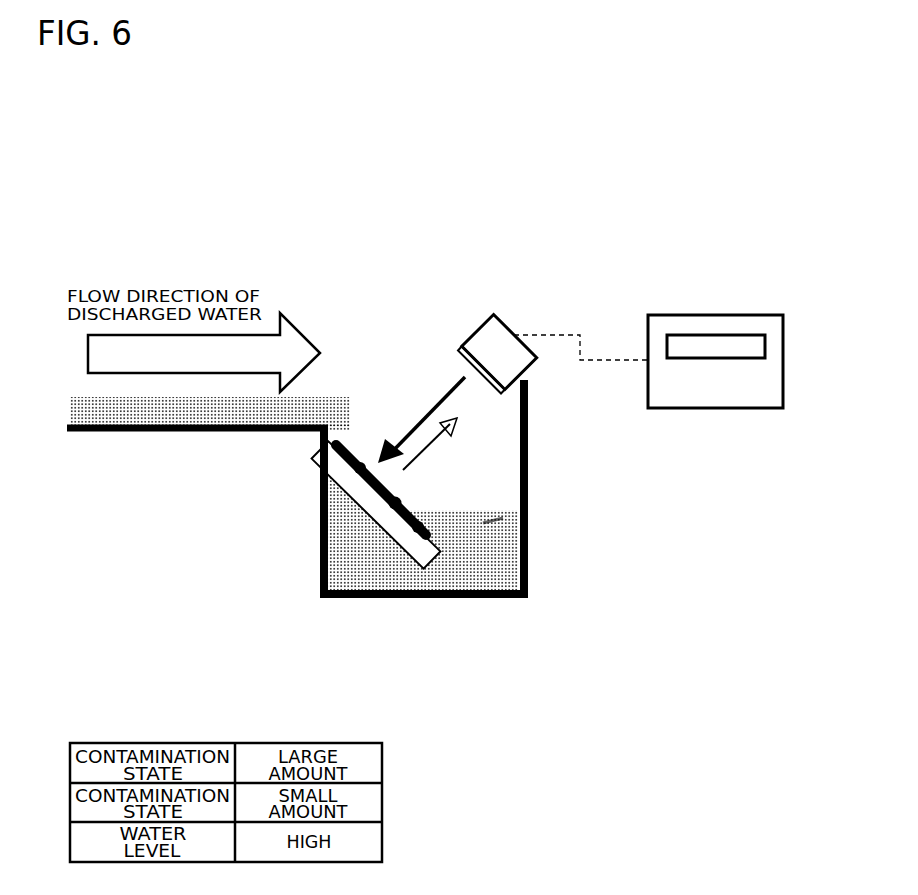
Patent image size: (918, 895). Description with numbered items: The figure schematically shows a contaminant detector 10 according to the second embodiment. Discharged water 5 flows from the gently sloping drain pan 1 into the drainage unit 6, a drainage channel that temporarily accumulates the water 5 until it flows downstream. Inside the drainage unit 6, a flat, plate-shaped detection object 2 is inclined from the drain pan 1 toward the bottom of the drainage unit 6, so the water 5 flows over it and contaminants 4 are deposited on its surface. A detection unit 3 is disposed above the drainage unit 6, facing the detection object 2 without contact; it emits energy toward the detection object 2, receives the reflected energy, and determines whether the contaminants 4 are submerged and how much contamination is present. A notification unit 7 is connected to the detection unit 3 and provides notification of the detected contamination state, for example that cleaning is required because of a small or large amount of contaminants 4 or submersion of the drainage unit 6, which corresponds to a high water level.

The drain pan 1 is at (198, 432).
The detection object 2 is at (373, 522).
The detection unit 3 is at (520, 340).
The contaminants 4 is at (400, 498).
The water 5 is at (510, 548).
The drainage unit 6 is at (472, 598).
The notification unit 7 is at (708, 315).
The contaminant detector 10 is at (614, 229).